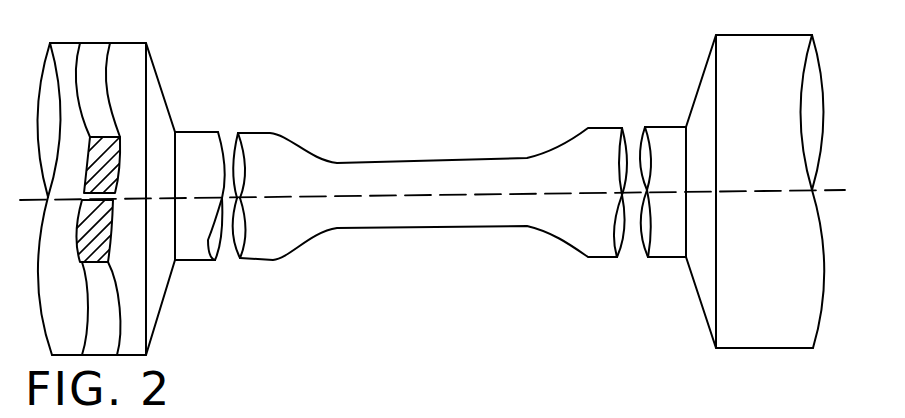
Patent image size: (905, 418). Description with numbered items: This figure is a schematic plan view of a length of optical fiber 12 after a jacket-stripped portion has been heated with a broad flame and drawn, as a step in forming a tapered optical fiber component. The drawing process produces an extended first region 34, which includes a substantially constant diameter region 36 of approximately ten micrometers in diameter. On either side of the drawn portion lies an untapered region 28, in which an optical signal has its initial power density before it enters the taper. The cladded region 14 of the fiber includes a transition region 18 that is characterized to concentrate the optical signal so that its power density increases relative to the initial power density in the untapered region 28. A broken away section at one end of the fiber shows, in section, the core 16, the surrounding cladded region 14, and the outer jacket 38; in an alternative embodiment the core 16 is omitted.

The optical fiber 12 is at (732, 226).
The cladded region 14 is at (120, 147).
The core 16 is at (113, 203).
The transition region 18 is at (432, 234).
The untapered region 28 is at (268, 110).
The extended first region 34 is at (572, 107).
The substantially constant diameter region 36 is at (527, 282).
The jacket 38 is at (91, 199).